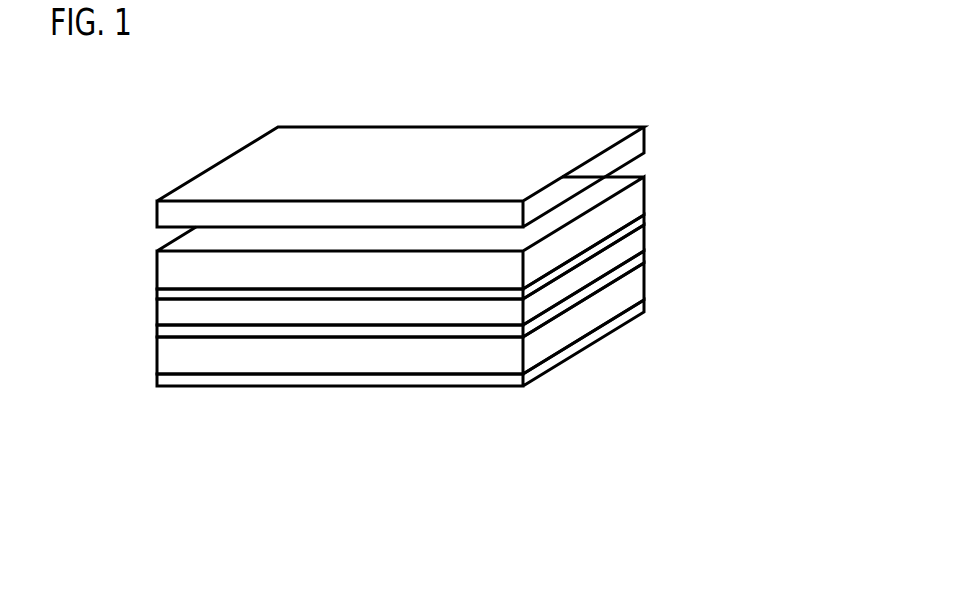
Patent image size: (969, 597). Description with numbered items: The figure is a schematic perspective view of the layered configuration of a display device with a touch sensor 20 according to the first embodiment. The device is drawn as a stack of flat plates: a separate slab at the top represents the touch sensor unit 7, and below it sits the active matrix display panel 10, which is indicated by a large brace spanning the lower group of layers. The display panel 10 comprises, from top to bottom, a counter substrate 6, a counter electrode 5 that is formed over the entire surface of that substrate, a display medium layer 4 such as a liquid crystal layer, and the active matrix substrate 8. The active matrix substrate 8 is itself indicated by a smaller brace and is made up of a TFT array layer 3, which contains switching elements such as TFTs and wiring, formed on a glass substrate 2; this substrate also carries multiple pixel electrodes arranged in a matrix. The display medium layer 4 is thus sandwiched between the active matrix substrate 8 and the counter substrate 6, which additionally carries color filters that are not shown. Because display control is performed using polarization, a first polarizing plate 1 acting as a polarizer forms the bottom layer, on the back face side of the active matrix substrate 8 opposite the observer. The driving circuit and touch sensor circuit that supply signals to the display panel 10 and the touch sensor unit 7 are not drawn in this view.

The first polarizing plate 1 is at (633, 314).
The glass substrate 2 is at (633, 294).
The TFT array layer 3 is at (633, 264).
The display medium layer 4 is at (633, 248).
The counter electrode 5 is at (635, 228).
The counter substrate 6 is at (632, 200).
The touch sensor unit 7 is at (634, 146).
The active matrix substrate 8 is at (700, 240).
The display panel 10 is at (754, 313).
The display device with a touch sensor 20 is at (587, 96).